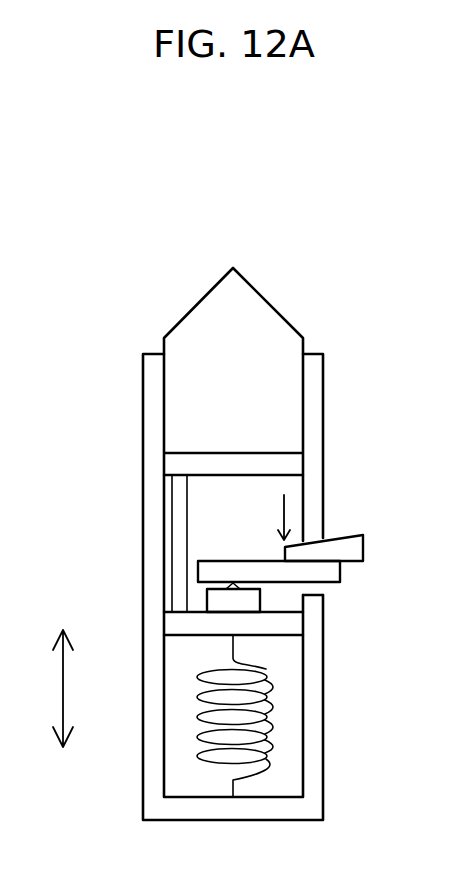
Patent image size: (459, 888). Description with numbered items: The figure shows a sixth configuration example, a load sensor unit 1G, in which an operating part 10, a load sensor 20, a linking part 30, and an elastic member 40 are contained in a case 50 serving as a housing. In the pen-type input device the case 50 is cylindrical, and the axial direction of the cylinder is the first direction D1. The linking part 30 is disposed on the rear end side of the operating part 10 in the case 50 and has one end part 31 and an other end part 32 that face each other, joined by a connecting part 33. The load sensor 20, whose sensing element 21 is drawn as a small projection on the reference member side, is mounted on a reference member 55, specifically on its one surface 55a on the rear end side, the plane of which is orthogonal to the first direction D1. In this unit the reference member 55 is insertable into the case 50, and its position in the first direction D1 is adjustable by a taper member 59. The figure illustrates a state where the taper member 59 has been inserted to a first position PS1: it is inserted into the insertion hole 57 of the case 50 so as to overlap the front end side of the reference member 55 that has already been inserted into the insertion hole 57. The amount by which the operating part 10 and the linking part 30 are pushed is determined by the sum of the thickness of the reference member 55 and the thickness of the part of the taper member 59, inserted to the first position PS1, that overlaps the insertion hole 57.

The load sensor unit 1G is at (273, 212).
The operating part 10 is at (262, 320).
The case 50 is at (310, 398).
The linking part 30 is at (172, 507).
The one end part 31 is at (173, 465).
The other end part 32 is at (172, 623).
The connecting part 33 is at (175, 550).
The load sensor 20 is at (282, 575).
The reference member 55 is at (335, 568).
The one surface 55a is at (247, 602).
The insertion hole 57 is at (323, 594).
The taper member 59 is at (353, 552).
The pressure sensitive element 21 is at (202, 587).
The elastic member 40 is at (282, 768).
The first position PS1 is at (288, 505).
The first direction D1 is at (62, 692).